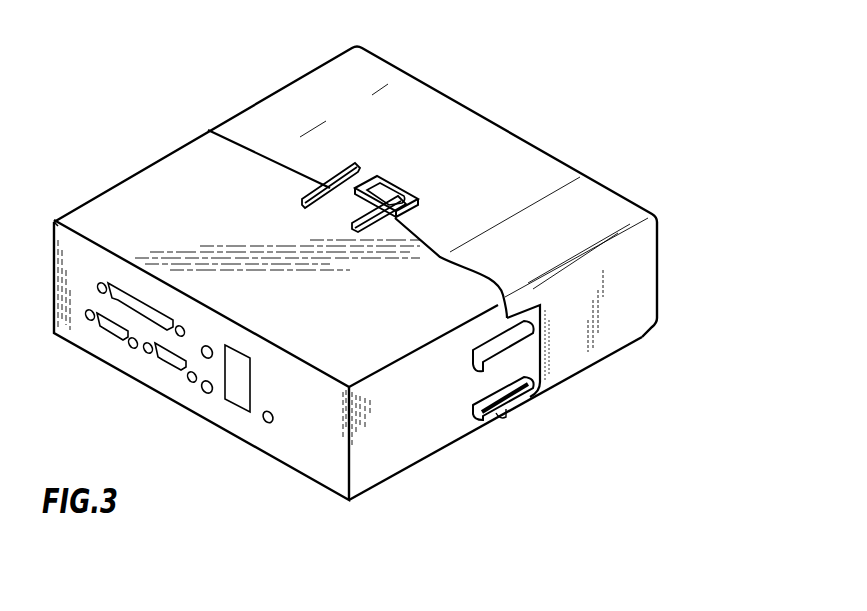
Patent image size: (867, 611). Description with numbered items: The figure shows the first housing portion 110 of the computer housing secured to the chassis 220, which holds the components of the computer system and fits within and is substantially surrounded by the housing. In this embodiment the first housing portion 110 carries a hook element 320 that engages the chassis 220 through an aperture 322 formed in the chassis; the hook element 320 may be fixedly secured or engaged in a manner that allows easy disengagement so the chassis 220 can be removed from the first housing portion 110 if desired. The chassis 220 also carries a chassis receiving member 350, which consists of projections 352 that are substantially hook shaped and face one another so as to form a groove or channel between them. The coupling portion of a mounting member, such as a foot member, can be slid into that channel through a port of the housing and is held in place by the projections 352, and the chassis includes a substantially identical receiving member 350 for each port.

The first housing portion 110 is at (370, 108).
The chassis 220 is at (412, 468).
The hook element 320 is at (383, 183).
The aperture 322 is at (357, 184).
The chassis receiving member 350 is at (468, 398).
The projections 352 is at (360, 166).